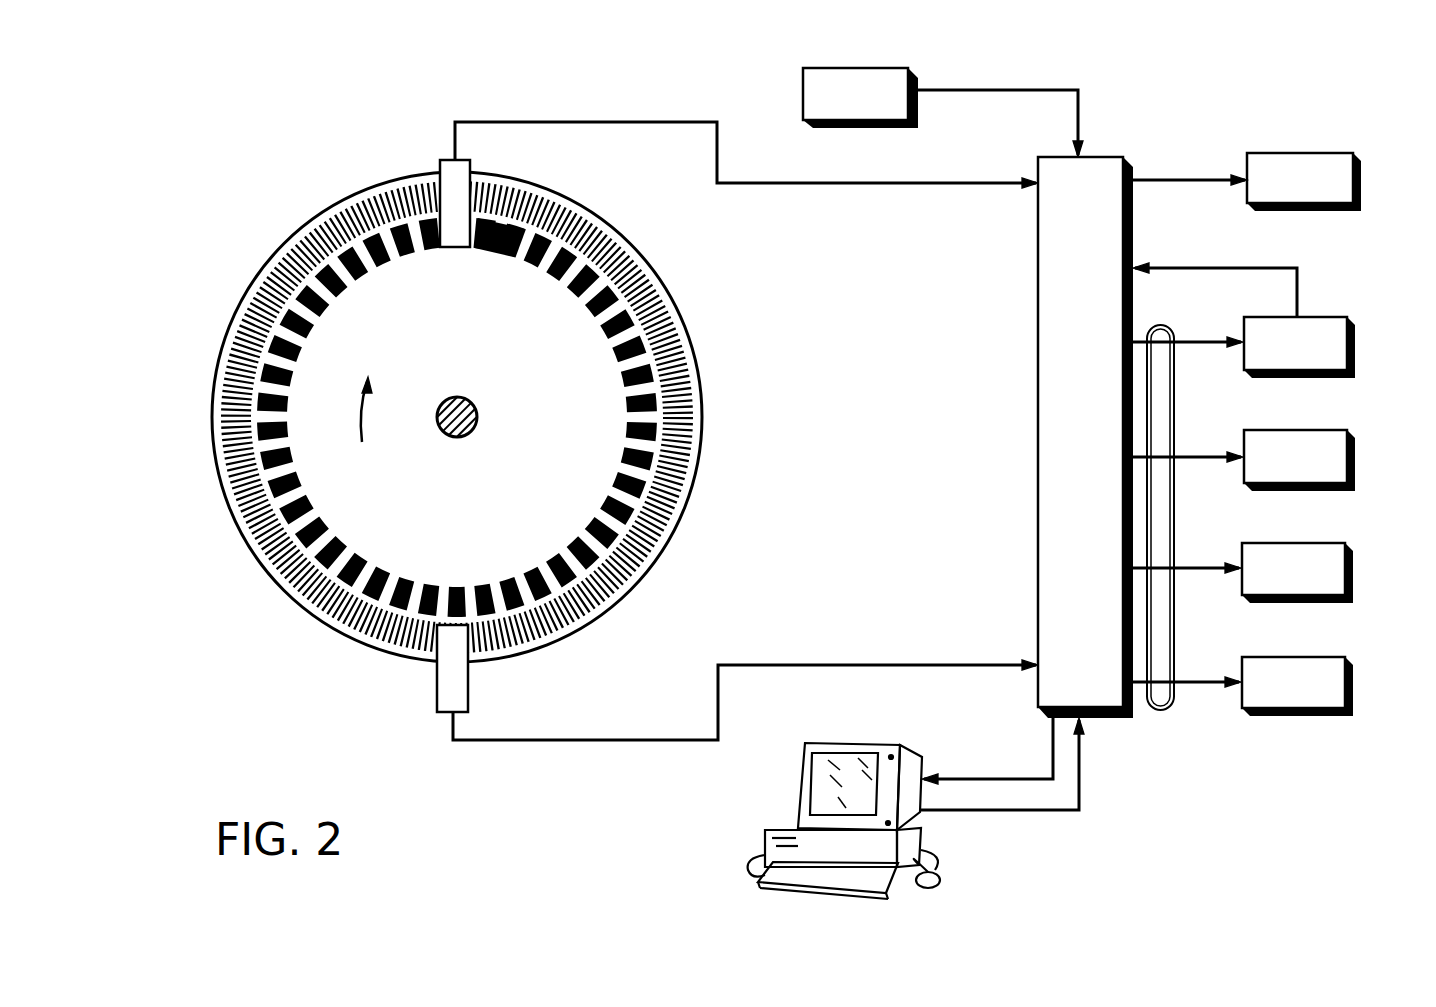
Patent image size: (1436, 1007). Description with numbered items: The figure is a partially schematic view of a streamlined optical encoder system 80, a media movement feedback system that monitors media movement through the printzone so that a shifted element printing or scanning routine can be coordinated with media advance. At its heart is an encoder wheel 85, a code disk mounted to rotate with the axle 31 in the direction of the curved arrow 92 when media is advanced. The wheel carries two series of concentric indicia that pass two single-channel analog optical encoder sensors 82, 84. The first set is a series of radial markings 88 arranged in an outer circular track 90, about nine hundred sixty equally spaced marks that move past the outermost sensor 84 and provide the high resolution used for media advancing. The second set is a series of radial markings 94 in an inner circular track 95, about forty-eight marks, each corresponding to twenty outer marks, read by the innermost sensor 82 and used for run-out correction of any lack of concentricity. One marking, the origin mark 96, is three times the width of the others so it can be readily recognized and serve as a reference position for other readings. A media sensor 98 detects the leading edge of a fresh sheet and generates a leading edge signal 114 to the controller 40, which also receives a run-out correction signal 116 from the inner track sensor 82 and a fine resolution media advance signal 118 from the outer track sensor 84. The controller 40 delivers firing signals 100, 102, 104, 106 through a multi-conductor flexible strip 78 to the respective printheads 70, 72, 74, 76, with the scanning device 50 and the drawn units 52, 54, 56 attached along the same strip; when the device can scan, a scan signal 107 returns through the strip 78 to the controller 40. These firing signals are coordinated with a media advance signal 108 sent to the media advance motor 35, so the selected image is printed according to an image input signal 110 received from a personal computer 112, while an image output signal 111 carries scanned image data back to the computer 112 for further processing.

The streamlined optical encoder system 80 is at (262, 92).
The optical encoder sensor 82 is at (440, 162).
The optical encoder sensor 84 is at (437, 690).
The encoder wheel 85 is at (317, 353).
The radial markings 88 is at (312, 247).
The outer circular track 90 is at (672, 294).
The curved arrow 92 is at (360, 424).
The radial markings 94 is at (555, 563).
The inner circular track 95 is at (540, 275).
The origin mark 96 is at (490, 250).
The axle 31 is at (447, 435).
The media sensor 98 is at (812, 87).
The leading edge signal 114 is at (982, 90).
The run-out correction signal 116 is at (640, 121).
The fine resolution media advance signal 118 is at (573, 740).
The controller 40 is at (1098, 247).
The media advance motor 35 is at (1307, 160).
The media advance signal 108 is at (1210, 180).
The scan signal 107 is at (1298, 280).
The multi-conductor flexible strip 78 is at (1172, 318).
The scanning device 50 is at (1311, 328).
The second actuator 52 is at (1316, 447).
The third actuator 54 is at (1318, 558).
The fourth actuator 56 is at (1316, 670).
The printhead 70 is at (1300, 378).
The printhead 72 is at (1297, 492).
The printhead 74 is at (1292, 605).
The printhead 76 is at (1283, 715).
The firing signal 100 is at (1208, 342).
The firing signal 102 is at (1208, 457).
The firing signal 104 is at (1212, 568).
The firing signal 106 is at (1212, 682).
The image input signal 110 is at (996, 812).
The image output signal 111 is at (990, 777).
The personal computer 112 is at (820, 845).